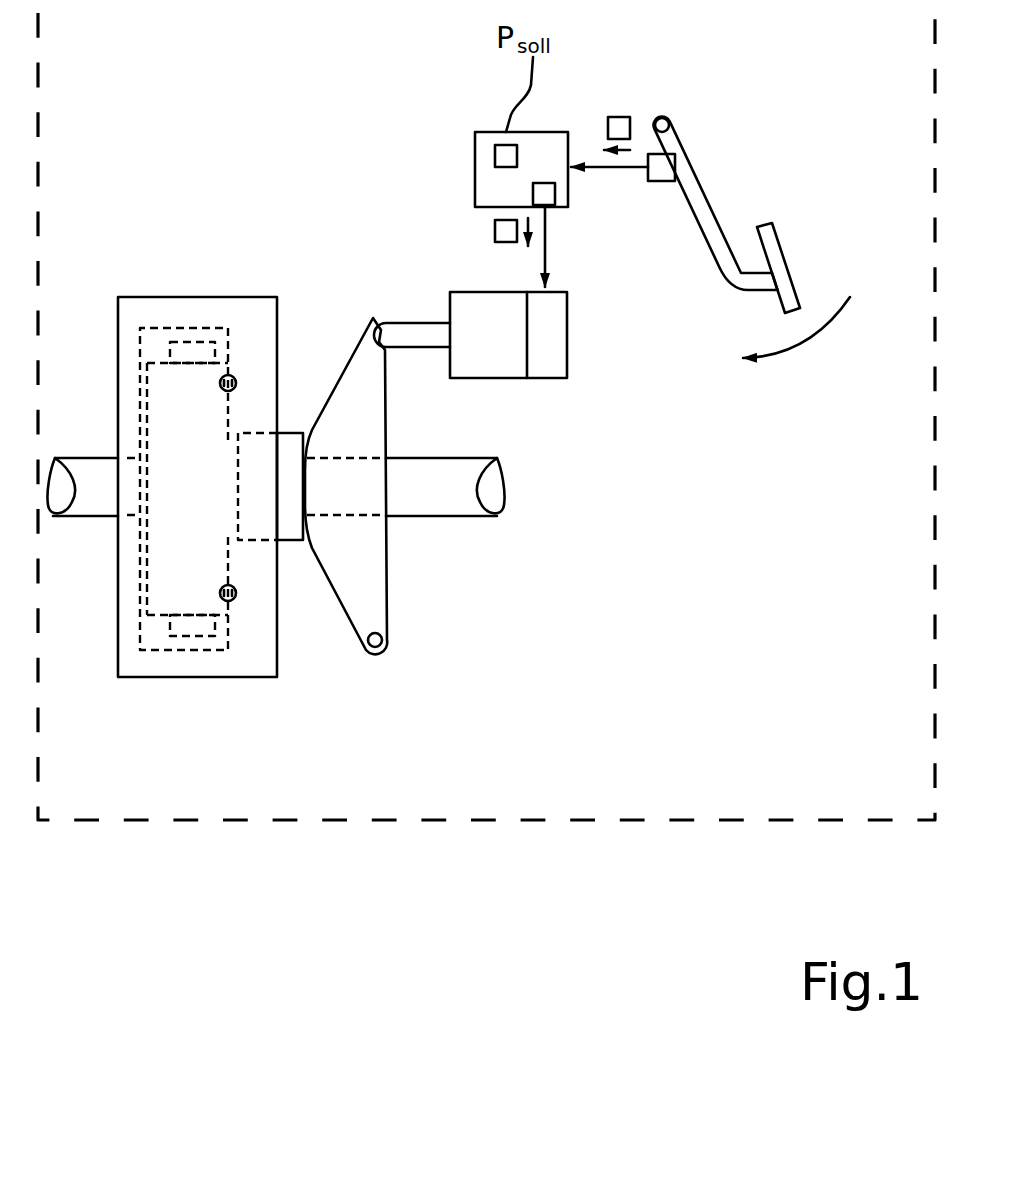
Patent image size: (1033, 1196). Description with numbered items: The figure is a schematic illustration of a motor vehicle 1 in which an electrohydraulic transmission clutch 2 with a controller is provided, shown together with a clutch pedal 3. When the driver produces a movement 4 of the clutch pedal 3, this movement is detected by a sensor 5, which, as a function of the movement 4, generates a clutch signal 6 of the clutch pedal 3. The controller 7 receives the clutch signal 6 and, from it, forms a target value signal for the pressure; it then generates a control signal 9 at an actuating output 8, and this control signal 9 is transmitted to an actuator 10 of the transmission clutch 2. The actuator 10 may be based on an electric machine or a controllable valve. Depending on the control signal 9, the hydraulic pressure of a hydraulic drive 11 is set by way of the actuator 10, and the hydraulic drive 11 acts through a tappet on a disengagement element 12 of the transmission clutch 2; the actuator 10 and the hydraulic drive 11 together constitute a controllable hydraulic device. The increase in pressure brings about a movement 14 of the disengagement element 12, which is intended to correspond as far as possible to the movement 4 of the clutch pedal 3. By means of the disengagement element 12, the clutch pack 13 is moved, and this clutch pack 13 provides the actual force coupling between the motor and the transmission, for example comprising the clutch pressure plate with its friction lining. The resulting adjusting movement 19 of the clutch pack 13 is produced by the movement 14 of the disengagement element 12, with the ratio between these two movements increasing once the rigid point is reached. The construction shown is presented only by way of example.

The motor vehicle 1 is at (782, 820).
The transmission clutch 2 is at (501, 661).
The clutch pedal 3 is at (778, 233).
The movement 4 is at (800, 347).
The sensor 5 is at (661, 182).
The clutch signal 6 is at (618, 117).
The controller 7 is at (475, 147).
The actuating output 8 is at (545, 183).
The control signal 9 is at (495, 232).
The actuator 10 is at (567, 320).
The hydraulic drive 11 is at (497, 378).
The disengagement element 12 is at (385, 412).
The clutch pack 13 is at (198, 320).
The movement 14 is at (407, 292).
The adjusting movement 19 is at (212, 317).